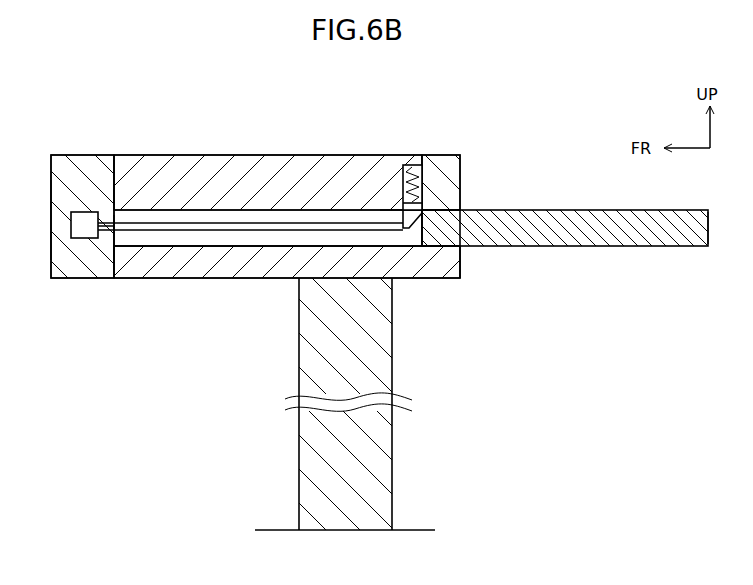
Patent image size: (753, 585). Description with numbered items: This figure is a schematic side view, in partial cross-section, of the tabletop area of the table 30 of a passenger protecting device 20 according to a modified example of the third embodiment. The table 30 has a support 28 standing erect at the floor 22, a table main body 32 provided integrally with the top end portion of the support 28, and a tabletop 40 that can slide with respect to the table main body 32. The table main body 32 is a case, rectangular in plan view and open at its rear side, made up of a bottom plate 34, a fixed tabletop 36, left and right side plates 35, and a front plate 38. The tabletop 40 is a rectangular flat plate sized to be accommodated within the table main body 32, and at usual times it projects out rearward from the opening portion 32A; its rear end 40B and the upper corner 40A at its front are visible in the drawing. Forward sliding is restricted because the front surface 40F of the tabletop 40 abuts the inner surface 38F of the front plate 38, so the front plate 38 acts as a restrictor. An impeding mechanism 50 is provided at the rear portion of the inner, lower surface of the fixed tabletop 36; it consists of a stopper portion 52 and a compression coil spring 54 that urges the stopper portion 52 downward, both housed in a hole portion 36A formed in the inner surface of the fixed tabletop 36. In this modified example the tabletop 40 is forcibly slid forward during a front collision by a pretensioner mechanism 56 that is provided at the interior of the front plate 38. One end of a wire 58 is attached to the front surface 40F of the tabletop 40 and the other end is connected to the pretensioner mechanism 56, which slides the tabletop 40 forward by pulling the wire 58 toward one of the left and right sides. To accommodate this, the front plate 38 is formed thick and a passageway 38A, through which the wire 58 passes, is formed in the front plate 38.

The passenger protecting device 20 is at (226, 120).
The floor 22 is at (413, 528).
The support 28 is at (298, 386).
The table 30 is at (160, 140).
The table main body 32 is at (52, 153).
The opening portion 32A is at (461, 267).
The bottom plate 34 is at (212, 282).
The side plate 35 is at (160, 232).
The fixed tabletop 36 is at (265, 152).
The hole portion 36A is at (395, 217).
The front plate 38 is at (49, 236).
The passageway 38A is at (134, 170).
The inner surface of the front plate 38F is at (117, 244).
The tabletop 40 is at (562, 208).
The upper corner of arm member 40A is at (425, 211).
The rear end of arm member 40B is at (709, 248).
The front surface of the tabletop 40F is at (421, 244).
The impeding mechanism 50 is at (427, 169).
The stopper portion 52 is at (424, 212).
The compression coil spring 54 is at (424, 200).
The pretensioner mechanism 56 is at (84, 232).
The wire 58 is at (259, 234).